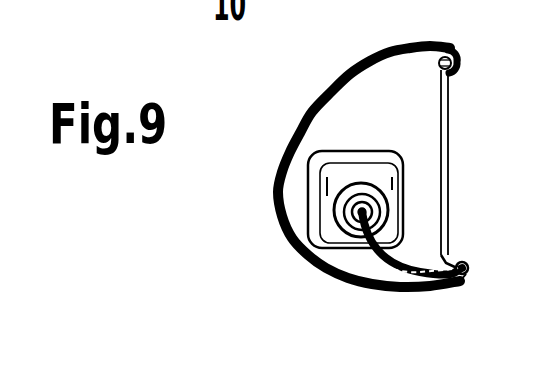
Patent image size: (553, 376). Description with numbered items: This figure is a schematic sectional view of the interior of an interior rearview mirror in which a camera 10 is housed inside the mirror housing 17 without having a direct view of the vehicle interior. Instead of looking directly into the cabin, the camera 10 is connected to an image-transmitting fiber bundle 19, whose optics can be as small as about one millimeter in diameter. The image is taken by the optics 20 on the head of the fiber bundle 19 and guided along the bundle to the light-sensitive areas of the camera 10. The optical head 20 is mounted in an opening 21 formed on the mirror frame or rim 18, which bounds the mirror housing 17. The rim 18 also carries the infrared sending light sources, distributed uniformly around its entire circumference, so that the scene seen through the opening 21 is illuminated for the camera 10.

The camera 10 is at (347, 208).
The mirror housing 17 is at (284, 139).
The rim 18 is at (452, 50).
The image-transmitting fiber bundle 19 is at (400, 262).
The optics 20 is at (470, 268).
The opening 21 is at (468, 275).